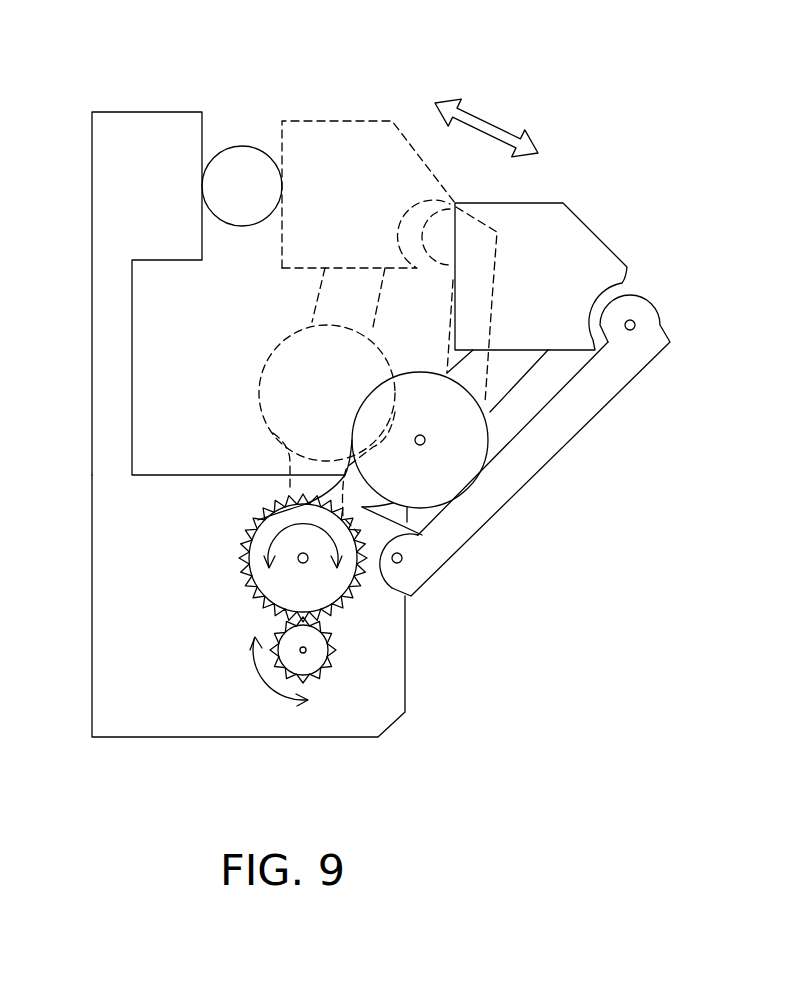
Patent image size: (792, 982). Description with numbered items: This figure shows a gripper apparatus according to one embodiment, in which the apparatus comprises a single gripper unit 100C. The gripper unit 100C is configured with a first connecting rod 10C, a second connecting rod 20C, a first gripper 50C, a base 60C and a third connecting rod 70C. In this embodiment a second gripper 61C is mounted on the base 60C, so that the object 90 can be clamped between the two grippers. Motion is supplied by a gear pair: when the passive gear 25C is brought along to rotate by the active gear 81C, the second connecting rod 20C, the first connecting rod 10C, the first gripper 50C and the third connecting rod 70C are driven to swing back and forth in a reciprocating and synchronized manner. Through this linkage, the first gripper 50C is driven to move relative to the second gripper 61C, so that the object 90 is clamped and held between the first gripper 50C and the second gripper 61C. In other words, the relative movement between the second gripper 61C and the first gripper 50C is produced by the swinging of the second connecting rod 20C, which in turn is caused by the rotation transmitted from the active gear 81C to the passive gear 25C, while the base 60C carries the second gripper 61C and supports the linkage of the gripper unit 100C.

The gripper unit 100C is at (607, 120).
The first connecting rod 10C is at (500, 375).
The second connecting rod 20C is at (415, 533).
The passive gear 25C is at (343, 593).
The first gripper 50C is at (572, 233).
The base 60C is at (393, 702).
The second gripper 61C is at (155, 130).
The third connecting rod 70C is at (532, 457).
The active gear 81C is at (322, 678).
The object 90 is at (242, 158).